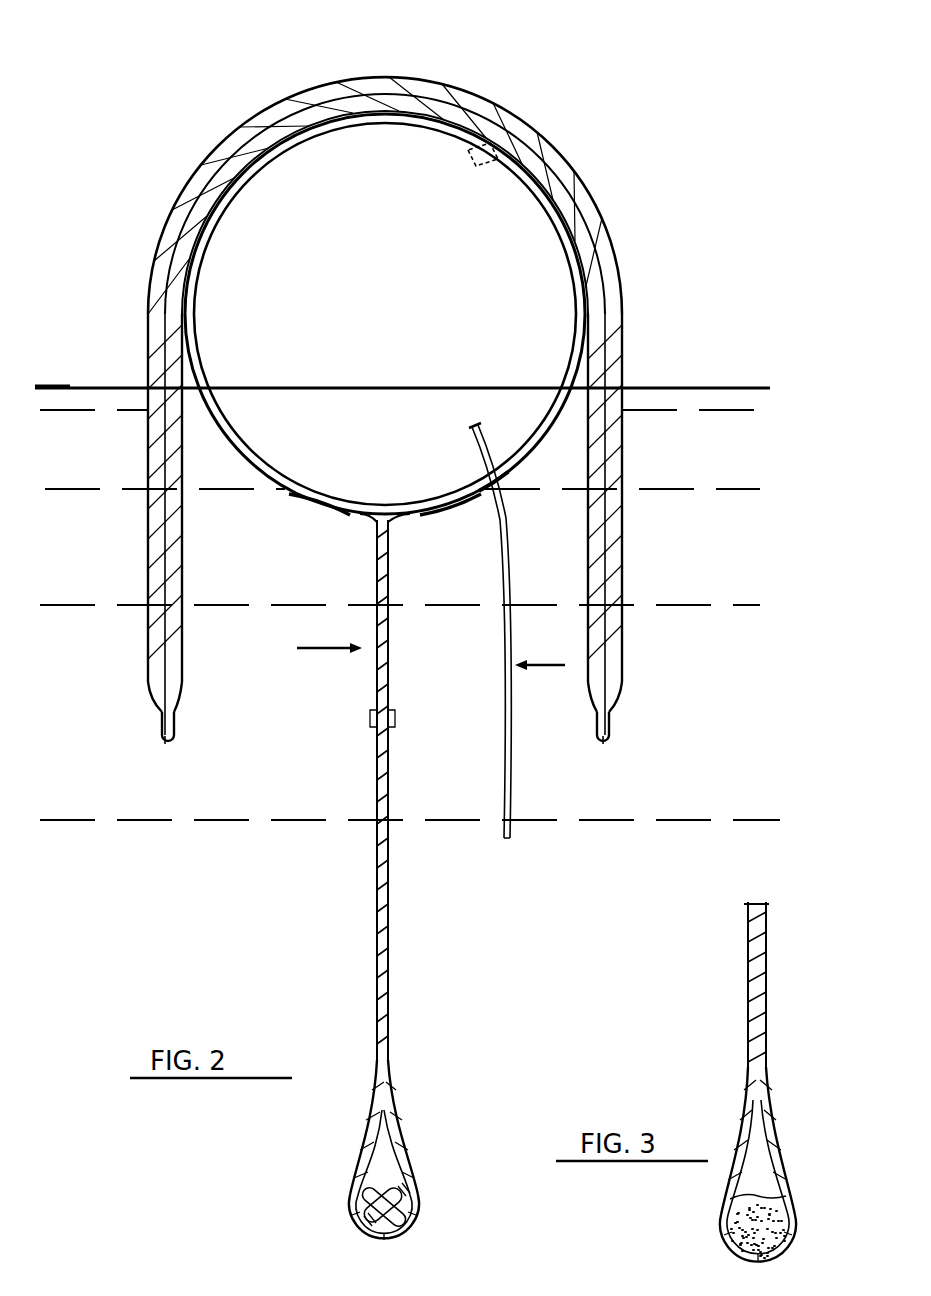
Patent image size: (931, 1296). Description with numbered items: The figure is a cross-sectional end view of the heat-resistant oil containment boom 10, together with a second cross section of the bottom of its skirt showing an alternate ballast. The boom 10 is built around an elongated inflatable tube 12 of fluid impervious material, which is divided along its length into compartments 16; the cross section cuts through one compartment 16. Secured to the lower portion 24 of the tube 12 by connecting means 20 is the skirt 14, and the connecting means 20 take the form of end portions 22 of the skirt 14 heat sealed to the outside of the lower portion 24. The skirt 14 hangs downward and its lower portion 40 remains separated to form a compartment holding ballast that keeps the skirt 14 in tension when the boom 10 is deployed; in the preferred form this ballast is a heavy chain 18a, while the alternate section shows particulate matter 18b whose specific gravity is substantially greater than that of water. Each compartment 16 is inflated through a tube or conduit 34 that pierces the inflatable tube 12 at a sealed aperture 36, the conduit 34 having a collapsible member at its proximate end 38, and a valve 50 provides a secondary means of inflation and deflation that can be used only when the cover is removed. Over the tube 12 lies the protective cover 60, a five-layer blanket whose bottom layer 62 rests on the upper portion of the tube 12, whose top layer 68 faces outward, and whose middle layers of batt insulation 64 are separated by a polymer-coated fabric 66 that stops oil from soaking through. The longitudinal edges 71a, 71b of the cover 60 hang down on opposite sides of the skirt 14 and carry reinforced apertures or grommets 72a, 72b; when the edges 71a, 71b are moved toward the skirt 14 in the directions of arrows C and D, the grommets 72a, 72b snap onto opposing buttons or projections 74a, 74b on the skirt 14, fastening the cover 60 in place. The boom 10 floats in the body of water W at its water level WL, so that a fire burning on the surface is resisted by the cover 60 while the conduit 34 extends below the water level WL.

In FIG. 2, the heat-resistant oil containment boom 10 is at (530, 118).
In FIG. 2, the inflatable tube 12 is at (192, 322).
In FIG. 2, the skirt 14 is at (372, 928).
In FIG. 3, the skirt 14 is at (766, 1004).
In FIG. 2, the compartment 16 is at (393, 305).
In FIG. 2, the heavy chain 18a is at (414, 1220).
In FIG. 3, the particulate matter 18b is at (790, 1216).
In FIG. 2, the connecting means 20 is at (406, 523).
In FIG. 2, the end portions 22 is at (350, 522).
In FIG. 2, the lower portion 24 is at (368, 512).
In FIG. 2, the tube or conduit 34 is at (508, 797).
In FIG. 2, the sealed aperture 36 is at (498, 462).
In FIG. 2, the proximate end 38 is at (478, 426).
In FIG. 2, the lower portion of skirt 40 is at (398, 1126).
In FIG. 3, the lower portion of skirt 40 is at (776, 1152).
In FIG. 2, the valve 50 is at (492, 171).
In FIG. 2, the protective cover 60 is at (628, 432).
In FIG. 2, the bottom layer 62 is at (188, 691).
In FIG. 2, the batt insulation 64 is at (152, 684).
In FIG. 2, the polymer-coated fabric 66 is at (620, 684).
In FIG. 2, the top layer 68 is at (630, 588).
In FIG. 2, the longitudinal edge 71a is at (184, 713).
In FIG. 2, the longitudinal edge 71b is at (598, 712).
In FIG. 2, the aperture or grommet 72a is at (180, 737).
In FIG. 2, the aperture or grommet 72b is at (608, 735).
In FIG. 2, the button or projection 74a is at (371, 720).
In FIG. 2, the button or projection 74b is at (395, 718).
In FIG. 2, the body of water W is at (646, 386).
In FIG. 2, the water level WL is at (424, 598).
In FIG. 2, the arrow C is at (322, 646).
In FIG. 2, the arrow D is at (566, 663).